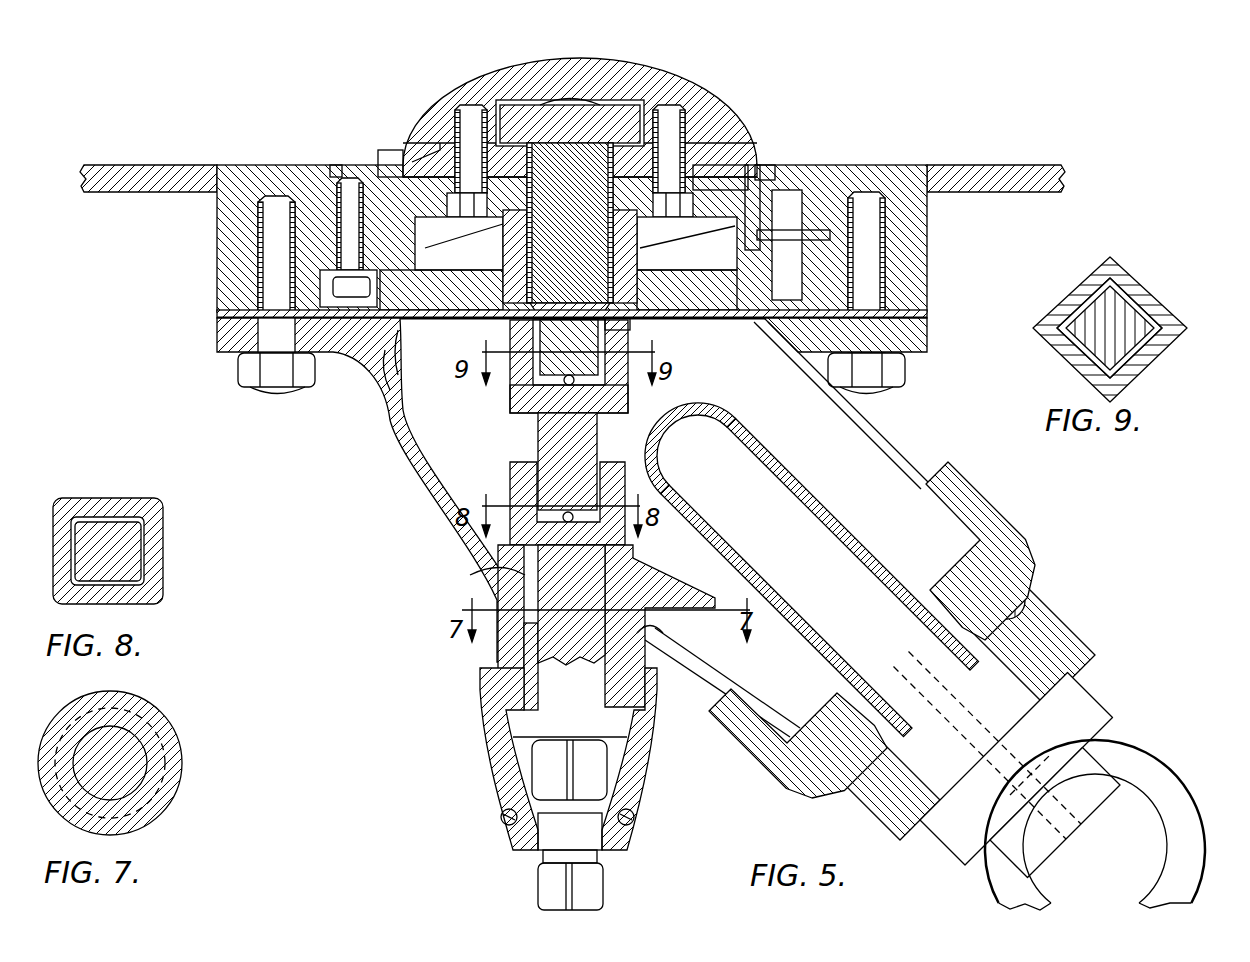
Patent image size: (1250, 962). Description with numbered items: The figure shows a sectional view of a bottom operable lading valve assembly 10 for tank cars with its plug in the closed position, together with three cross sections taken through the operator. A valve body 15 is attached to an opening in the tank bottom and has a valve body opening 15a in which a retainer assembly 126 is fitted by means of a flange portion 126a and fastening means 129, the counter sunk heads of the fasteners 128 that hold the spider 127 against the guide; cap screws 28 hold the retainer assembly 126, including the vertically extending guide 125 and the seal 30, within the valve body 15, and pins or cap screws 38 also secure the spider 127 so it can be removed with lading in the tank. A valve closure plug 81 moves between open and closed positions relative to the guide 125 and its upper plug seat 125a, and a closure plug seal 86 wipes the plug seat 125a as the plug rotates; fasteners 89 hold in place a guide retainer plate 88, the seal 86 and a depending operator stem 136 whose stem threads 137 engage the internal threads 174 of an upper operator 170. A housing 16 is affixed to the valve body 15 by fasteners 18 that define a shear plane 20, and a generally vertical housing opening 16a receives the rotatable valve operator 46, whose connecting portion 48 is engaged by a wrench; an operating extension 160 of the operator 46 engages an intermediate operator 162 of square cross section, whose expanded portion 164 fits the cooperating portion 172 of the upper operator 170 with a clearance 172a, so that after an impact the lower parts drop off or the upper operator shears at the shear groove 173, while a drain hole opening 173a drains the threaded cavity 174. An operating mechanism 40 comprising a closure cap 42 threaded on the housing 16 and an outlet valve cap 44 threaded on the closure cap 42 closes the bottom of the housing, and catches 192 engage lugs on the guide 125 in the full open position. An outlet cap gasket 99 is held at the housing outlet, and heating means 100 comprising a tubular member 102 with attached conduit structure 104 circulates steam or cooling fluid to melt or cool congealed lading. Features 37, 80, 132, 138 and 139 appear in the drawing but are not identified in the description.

In FIG. 5, the bottom operable lading valve assembly 10 is at (1014, 162).
In FIG. 5, the valve body 15 is at (906, 246).
In FIG. 5, the valve body opening 15a is at (300, 250).
In FIG. 5, the housing 16 is at (440, 465).
In FIG. 7, the housing 16 is at (150, 725).
In FIG. 5, the housing opening 16a is at (500, 570).
In FIG. 5, the fasteners 18 is at (240, 372).
In FIG. 5, the shear plane 20 is at (240, 318).
In FIG. 5, the cap screws 28 is at (345, 178).
In FIG. 5, the seal 30 is at (760, 230).
In FIG. 5, the flange 37 is at (410, 143).
In FIG. 5, the pins or cap screws 38 is at (505, 288).
In FIG. 5, the operating mechanism 40 is at (472, 564).
In FIG. 5, the closure cap 42 is at (485, 762).
In FIG. 5, the outlet valve cap 44 is at (600, 885).
In FIG. 5, the valve operator 46 is at (520, 588).
In FIG. 7, the valve operator 46 is at (135, 748).
In FIG. 5, the connecting portion 48 is at (600, 770).
In FIG. 5, the cover 80 is at (700, 79).
In FIG. 5, the valve closure plug 81 is at (588, 70).
In FIG. 5, the closure plug seal 86 is at (752, 165).
In FIG. 5, the guide retainer plate 88 is at (395, 150).
In FIG. 5, the fasteners 89 is at (700, 165).
In FIG. 5, the outlet cap gasket 99 is at (1015, 525).
In FIG. 5, the heating means 100 is at (1050, 556).
In FIG. 5, the tubular member 102 is at (798, 470).
In FIG. 5, the conduit structure 104 is at (1118, 745).
In FIG. 5, the guide 125 is at (340, 165).
In FIG. 5, the upper plug seat 125a is at (765, 165).
In FIG. 5, the retainer assembly 126 is at (640, 322).
In FIG. 5, the flange portion 126a is at (330, 365).
In FIG. 5, the spider 127 is at (388, 378).
In FIG. 5, the fasteners 128 is at (790, 190).
In FIG. 5, the counter sunk head 129 is at (775, 332).
In FIG. 5, the cavity 132 is at (576, 243).
In FIG. 5, the depending operator stem 136 is at (470, 105).
In FIG. 5, the stem threads 137 is at (420, 160).
In FIG. 5, the block 138 is at (482, 100).
In FIG. 5, the bolt 139 is at (670, 105).
In FIG. 5, the operating extension 160 is at (520, 490).
In FIG. 8, the operating extension 160 is at (140, 524).
In FIG. 5, the intermediate operator 162 is at (555, 440).
In FIG. 8, the intermediate operator 162 is at (128, 572).
In FIG. 5, the expanded portion 164 is at (512, 405).
In FIG. 9, the expanded portion 164 is at (1120, 275).
In FIG. 9, the upper operator 170 is at (1172, 308).
In FIG. 5, the cooperating portion 172 is at (520, 325).
In FIG. 9, the cooperating portion 172 is at (1140, 338).
In FIG. 9, the clearance 172a is at (1135, 355).
In FIG. 5, the shear groove 173 is at (640, 335).
In FIG. 5, the drain hole opening 173a is at (560, 380).
In FIG. 5, the internal threads 174 is at (570, 230).
In FIG. 5, the catches 192 is at (503, 232).